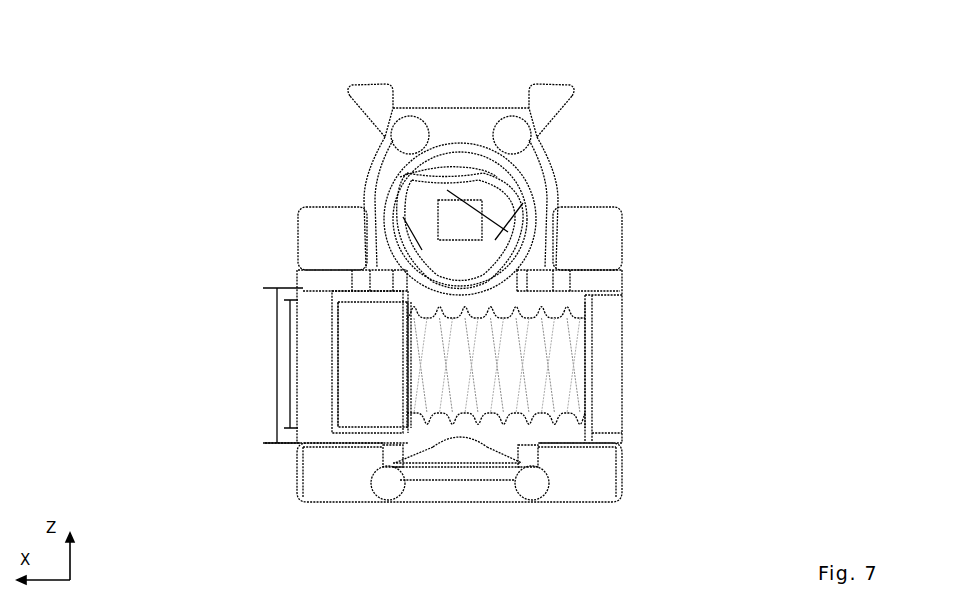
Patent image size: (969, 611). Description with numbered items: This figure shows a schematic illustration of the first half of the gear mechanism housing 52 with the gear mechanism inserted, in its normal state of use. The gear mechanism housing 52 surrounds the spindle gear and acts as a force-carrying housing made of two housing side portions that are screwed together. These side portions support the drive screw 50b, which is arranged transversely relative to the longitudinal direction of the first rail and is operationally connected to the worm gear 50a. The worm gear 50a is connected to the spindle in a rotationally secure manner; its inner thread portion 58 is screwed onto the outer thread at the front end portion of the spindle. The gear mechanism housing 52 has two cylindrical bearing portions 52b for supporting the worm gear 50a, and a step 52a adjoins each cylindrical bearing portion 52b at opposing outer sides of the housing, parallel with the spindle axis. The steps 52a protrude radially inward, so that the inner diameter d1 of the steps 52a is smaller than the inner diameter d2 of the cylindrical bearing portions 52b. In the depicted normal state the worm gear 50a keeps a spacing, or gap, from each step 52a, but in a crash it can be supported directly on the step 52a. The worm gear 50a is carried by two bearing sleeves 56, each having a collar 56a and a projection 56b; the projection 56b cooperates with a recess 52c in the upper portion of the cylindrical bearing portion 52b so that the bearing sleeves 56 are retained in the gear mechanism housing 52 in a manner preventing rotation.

The gear mechanism housing 52 is at (234, 110).
The step 52a is at (320, 298).
The cylindrical bearing portion 52b is at (353, 445).
The recess 52c is at (368, 267).
The bearing sleeve 56 is at (588, 296).
The collar 56a is at (532, 452).
The projection 56b is at (363, 275).
The inner thread portion 58 is at (558, 382).
The worm gear 50a is at (407, 297).
The drive screw 50b is at (440, 187).
The inner diameter of the steps d1 is at (288, 349).
The inner diameter of the cylindrical bearing portions d2 is at (277, 390).